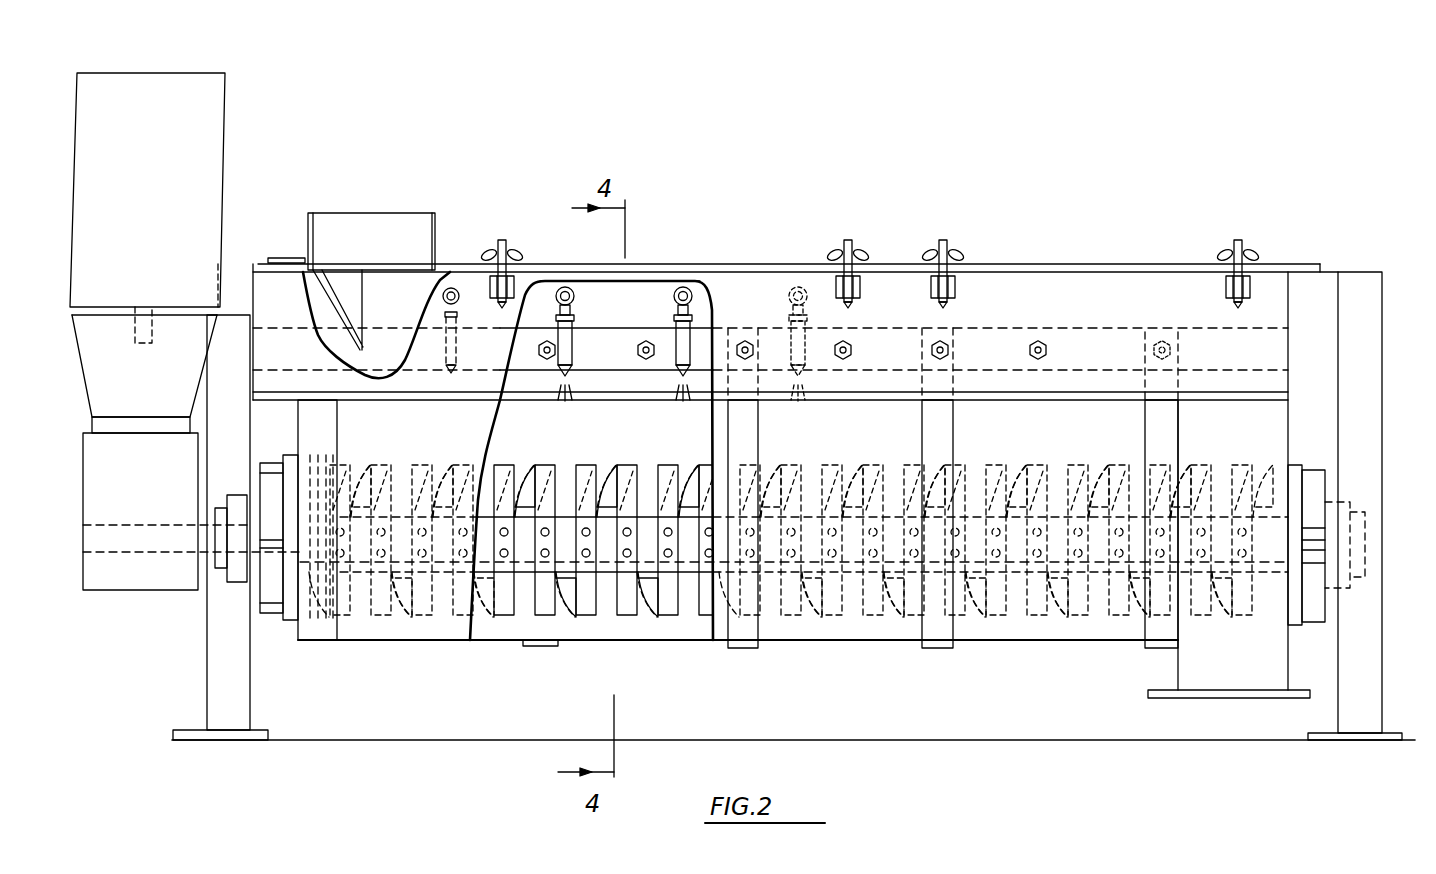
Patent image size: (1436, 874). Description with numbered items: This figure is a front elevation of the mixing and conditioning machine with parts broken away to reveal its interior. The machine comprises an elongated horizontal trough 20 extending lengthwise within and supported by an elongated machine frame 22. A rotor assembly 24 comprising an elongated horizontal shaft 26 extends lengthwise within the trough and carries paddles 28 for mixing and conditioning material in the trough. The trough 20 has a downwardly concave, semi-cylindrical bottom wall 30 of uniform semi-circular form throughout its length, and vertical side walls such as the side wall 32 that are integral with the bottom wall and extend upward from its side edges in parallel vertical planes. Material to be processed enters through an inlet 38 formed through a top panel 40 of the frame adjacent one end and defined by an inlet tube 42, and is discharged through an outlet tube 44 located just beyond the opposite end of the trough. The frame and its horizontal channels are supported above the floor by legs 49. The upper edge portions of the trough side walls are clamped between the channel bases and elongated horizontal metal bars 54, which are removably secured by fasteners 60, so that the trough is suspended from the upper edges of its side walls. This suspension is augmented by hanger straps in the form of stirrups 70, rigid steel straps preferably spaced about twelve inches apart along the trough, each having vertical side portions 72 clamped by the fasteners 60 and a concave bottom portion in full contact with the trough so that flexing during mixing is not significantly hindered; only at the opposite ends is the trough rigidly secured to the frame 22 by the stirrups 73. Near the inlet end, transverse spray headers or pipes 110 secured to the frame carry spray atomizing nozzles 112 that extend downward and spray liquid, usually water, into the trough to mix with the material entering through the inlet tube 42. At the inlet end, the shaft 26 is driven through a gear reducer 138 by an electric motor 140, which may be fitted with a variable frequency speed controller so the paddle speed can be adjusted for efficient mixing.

The trough 20 is at (1075, 422).
The machine frame 22 is at (1318, 262).
The rotor assembly 24 is at (681, 610).
The shaft 26 is at (525, 560).
The paddles 28 is at (660, 470).
The bottom wall 30 is at (440, 640).
The side wall 32 is at (1130, 436).
The inlet 38 is at (388, 265).
The top panel 40 is at (455, 287).
The inlet tube 42 is at (303, 240).
The outlet tube 44 is at (1288, 658).
The legs 49 is at (207, 660).
The bars 54 is at (613, 330).
The fasteners 60 is at (650, 340).
The stirrups 70 is at (745, 652).
The side portions 72 is at (925, 433).
The stirrups 73 is at (318, 642).
The spray headers 110 is at (690, 285).
The spray atomizing nozzles 112 is at (675, 355).
The gear reducer 138 is at (148, 585).
The electric motor 140 is at (210, 87).